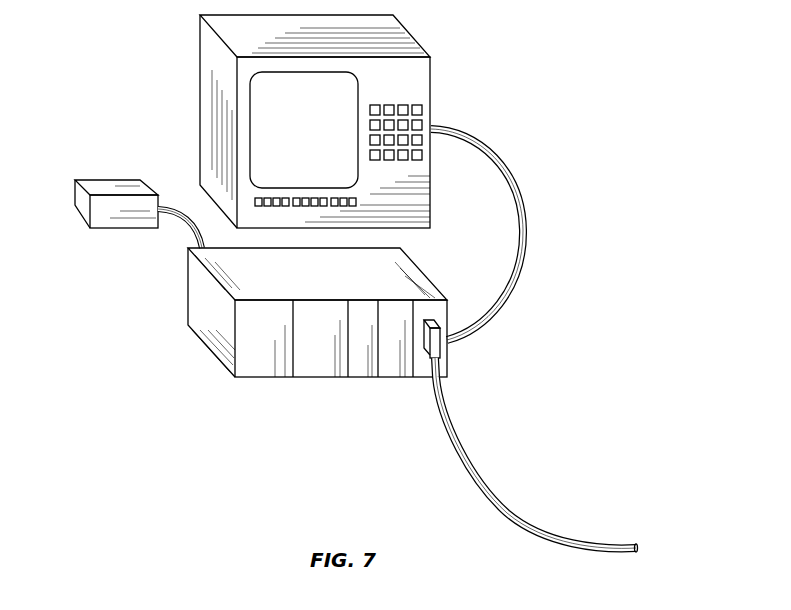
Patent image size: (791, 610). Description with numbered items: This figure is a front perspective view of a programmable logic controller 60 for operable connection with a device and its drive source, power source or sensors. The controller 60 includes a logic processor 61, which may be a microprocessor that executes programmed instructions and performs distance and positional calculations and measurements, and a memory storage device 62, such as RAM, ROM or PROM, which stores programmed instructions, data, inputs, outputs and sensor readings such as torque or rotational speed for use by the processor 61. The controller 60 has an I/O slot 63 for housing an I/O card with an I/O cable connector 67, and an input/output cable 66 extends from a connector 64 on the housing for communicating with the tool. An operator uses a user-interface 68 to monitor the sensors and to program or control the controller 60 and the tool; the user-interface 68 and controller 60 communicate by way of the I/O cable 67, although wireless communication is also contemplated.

The programmable logic controller 60 is at (133, 420).
The logic processor 61 is at (193, 305).
The memory storage device 62 is at (75, 208).
The I/O slot 63 is at (307, 375).
The connector 64 is at (425, 340).
The input/output cable 66 is at (515, 509).
The I/O cable connector 67 is at (530, 223).
The user-interface 68 is at (415, 40).